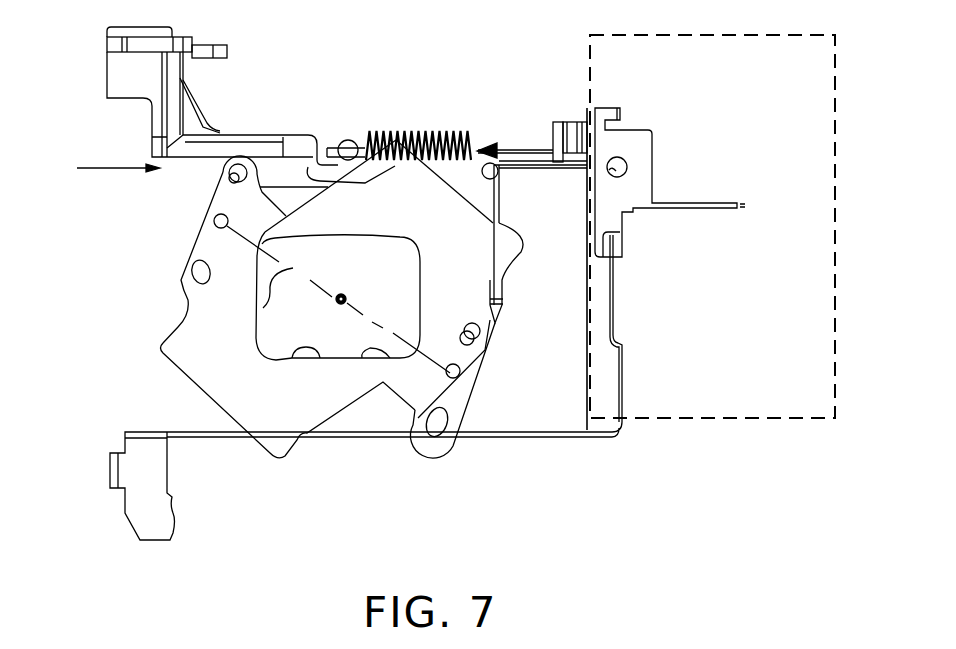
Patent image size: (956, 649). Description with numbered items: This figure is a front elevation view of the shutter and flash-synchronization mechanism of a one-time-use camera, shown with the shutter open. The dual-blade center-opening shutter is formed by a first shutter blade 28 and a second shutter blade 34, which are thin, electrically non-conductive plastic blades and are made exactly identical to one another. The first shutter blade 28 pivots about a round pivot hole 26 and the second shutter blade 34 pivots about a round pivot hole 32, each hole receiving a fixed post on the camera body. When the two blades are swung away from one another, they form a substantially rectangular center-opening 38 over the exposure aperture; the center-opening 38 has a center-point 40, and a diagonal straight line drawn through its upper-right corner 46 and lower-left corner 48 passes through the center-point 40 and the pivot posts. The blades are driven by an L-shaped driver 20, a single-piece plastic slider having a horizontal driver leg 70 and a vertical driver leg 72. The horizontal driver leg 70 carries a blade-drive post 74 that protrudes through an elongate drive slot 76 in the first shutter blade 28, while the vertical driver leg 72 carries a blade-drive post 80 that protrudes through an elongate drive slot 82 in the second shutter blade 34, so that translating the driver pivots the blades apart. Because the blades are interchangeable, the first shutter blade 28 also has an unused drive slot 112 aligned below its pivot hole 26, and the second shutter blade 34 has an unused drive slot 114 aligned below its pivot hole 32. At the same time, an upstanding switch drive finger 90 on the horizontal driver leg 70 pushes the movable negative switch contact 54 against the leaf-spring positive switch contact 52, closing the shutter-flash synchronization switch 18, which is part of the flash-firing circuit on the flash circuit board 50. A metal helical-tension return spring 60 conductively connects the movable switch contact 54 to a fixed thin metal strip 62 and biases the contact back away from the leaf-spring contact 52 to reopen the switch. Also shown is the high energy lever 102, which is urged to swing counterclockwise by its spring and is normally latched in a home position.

The shutter-flash synchronization switch 18 is at (527, 103).
The L-shaped driver 20 is at (523, 207).
The round pivot hole 26 is at (214, 221).
The first shutter blade 28 is at (150, 337).
The round pivot hole 32 is at (480, 365).
The second shutter blade 34 is at (492, 425).
The center-opening 38 is at (290, 362).
The center-point 40 is at (341, 297).
The corner 46 is at (260, 312).
The corner 48 is at (360, 362).
The flash circuit board 50 is at (765, 420).
The leaf-spring positive switch contact 52 is at (585, 120).
The movable negative switch contact 54 is at (530, 147).
The metal helical-tension return spring 60 is at (440, 137).
The fixed thin metal strip 62 is at (613, 272).
The horizontal driver leg 70 is at (347, 140).
The vertical driver leg 72 is at (514, 236).
The blade-drive post 74 is at (236, 176).
The elongate drive slot 76 is at (236, 180).
The blade-drive post 80 is at (103, 167).
The elongate drive slot 82 is at (478, 343).
The switch drive finger 90 is at (483, 140).
The high energy lever 102 is at (106, 62).
The unused drive slot 112 is at (180, 292).
The unused drive slot 114 is at (428, 425).